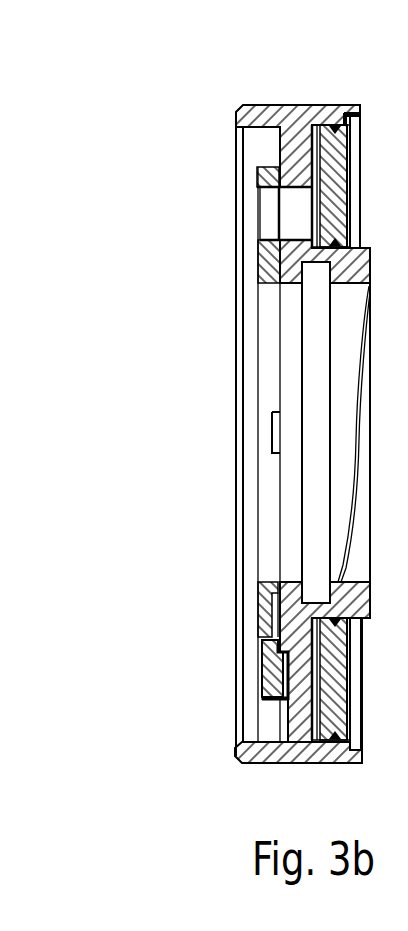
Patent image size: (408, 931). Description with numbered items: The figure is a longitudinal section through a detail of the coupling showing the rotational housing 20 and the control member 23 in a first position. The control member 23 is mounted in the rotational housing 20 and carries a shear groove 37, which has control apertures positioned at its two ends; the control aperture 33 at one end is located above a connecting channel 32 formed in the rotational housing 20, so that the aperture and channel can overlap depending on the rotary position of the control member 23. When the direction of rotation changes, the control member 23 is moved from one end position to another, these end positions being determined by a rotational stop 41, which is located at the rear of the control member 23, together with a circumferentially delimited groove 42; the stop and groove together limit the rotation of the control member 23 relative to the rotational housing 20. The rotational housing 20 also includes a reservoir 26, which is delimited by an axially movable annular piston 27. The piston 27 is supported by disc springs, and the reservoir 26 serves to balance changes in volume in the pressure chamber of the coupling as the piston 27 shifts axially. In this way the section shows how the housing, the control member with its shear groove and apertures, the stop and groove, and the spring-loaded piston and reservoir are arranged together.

The rotational housing 20 is at (290, 127).
The control member 23 is at (255, 168).
The reservoir 26 is at (317, 133).
The annular piston 27 is at (337, 178).
The connecting channel 32 is at (297, 230).
The control aperture 33 is at (270, 201).
The shear groove 37 is at (260, 653).
The rotational stop 41 is at (265, 698).
The circumferential groove 42 is at (302, 677).